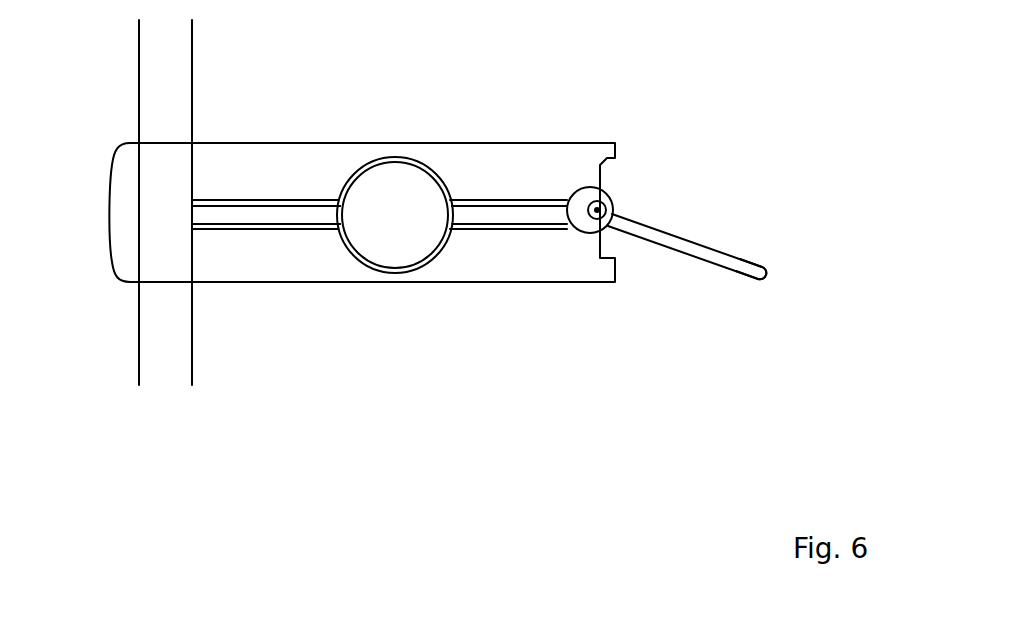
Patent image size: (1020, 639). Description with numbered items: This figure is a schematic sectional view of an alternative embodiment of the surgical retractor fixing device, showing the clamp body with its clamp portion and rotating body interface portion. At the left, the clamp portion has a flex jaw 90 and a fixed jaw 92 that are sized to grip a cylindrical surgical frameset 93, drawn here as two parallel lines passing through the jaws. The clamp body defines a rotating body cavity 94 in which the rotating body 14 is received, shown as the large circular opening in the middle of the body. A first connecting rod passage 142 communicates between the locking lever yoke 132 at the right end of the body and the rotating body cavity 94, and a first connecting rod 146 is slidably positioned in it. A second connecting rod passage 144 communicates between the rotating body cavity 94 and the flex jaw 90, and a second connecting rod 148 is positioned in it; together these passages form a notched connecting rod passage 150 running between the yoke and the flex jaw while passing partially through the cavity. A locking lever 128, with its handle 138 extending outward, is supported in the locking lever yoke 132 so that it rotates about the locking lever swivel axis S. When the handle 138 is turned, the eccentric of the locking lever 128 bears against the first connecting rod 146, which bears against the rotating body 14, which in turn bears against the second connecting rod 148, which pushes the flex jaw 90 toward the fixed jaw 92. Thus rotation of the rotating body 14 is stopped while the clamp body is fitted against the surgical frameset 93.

The locking lever yoke 132 is at (613, 122).
The surgical frameset 93 is at (160, 46).
The flex jaw 90 is at (205, 155).
The fixed jaw 92 is at (123, 177).
The notched connecting rod passage 150 is at (232, 200).
The second connecting rod 148 is at (245, 213).
The second connecting rod passage 144 is at (282, 228).
The rotating body cavity 94 is at (445, 178).
The rotating body 14 is at (398, 183).
The first connecting rod 146 is at (484, 215).
The first connecting rod passage 142 is at (532, 228).
The locking lever 128 is at (632, 213).
The locking lever swivel axis S is at (598, 210).
The handle 138 is at (730, 272).